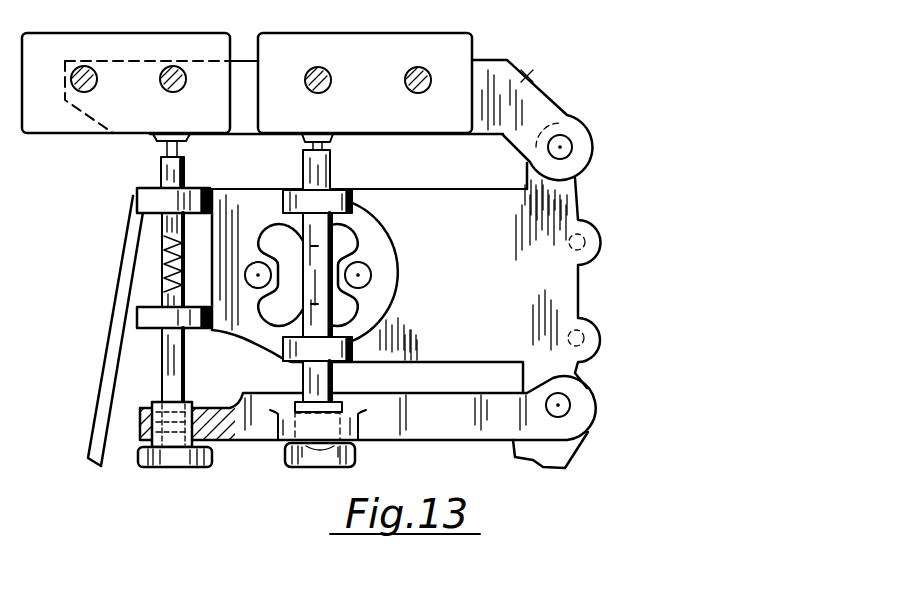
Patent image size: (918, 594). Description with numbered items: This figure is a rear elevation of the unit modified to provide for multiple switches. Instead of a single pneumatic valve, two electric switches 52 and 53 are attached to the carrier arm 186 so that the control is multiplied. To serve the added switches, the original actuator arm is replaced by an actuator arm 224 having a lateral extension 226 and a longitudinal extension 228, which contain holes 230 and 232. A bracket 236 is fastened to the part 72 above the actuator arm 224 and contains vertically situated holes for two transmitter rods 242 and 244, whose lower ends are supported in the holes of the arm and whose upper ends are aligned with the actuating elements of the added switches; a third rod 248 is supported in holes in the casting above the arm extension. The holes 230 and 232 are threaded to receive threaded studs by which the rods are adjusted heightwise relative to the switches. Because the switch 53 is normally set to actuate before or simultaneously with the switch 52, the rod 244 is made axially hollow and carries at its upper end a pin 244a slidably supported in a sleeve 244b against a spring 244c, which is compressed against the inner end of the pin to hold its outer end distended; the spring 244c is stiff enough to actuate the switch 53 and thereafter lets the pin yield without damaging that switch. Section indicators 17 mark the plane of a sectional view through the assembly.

The switch 53 is at (152, 18).
The switch 52 is at (415, 48).
The carrier arm 186 is at (570, 58).
The part 72 is at (507, 322).
The actuator arm 224 is at (480, 430).
The bracket 236 is at (393, 248).
The transmitter rod 242 is at (333, 383).
The hole 230 is at (357, 440).
The lateral extension 226 is at (280, 443).
The transmitter rod 244 is at (163, 372).
The pin 244a is at (163, 162).
The sleeve 244b is at (170, 195).
The spring 244c is at (168, 250).
The third rod 248 is at (170, 296).
The hole 232 is at (152, 418).
The longitudinal extension 228 is at (140, 440).
The section line indicator 17 is at (40, 285).